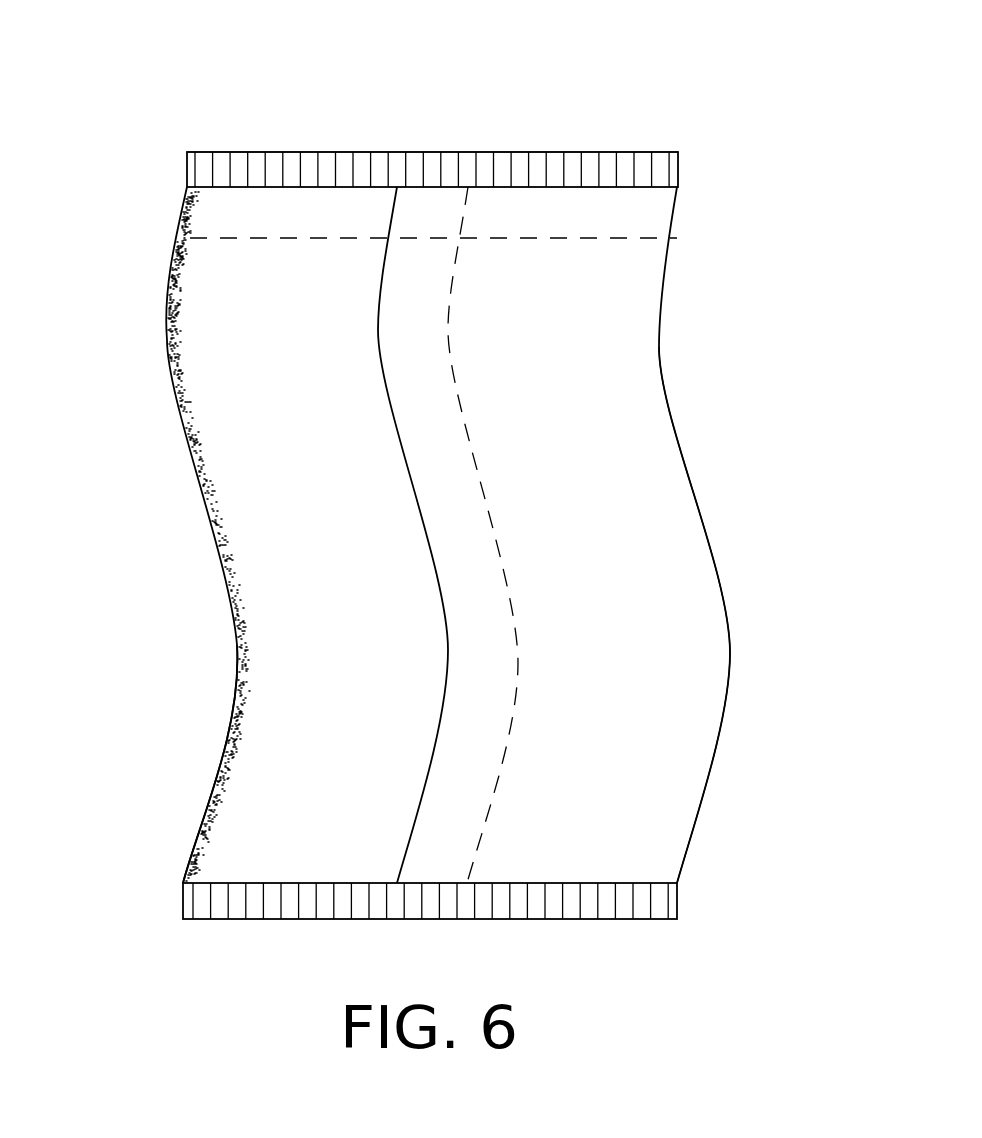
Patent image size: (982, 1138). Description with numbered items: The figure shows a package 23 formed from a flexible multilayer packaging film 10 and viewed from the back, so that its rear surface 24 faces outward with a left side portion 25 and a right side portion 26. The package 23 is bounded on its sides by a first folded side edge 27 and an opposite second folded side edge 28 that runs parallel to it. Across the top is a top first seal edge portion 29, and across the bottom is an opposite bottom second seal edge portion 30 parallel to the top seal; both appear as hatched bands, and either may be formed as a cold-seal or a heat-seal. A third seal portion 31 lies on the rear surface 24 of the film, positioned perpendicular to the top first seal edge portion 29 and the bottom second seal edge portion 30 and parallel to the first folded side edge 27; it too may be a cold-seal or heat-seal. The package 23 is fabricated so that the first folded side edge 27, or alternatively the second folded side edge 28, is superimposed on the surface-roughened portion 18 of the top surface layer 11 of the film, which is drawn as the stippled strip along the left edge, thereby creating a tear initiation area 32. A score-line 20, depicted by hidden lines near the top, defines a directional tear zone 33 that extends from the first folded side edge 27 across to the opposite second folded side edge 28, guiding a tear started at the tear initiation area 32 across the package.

The flexible multilayer packaging film 10 is at (640, 740).
The top surface layer 11 is at (306, 437).
The surface-roughened portion 18 is at (167, 332).
The score-line 20 is at (605, 240).
The package 23 is at (552, 58).
The rear surface 24 is at (610, 580).
The left side portion 25 is at (352, 825).
The right side portion 26 is at (622, 822).
The first folded side edge 27 is at (235, 700).
The second folded side edge 28 is at (660, 362).
The top first seal edge portion 29 is at (678, 170).
The bottom second seal edge portion 30 is at (640, 920).
The third seal portion 31 is at (420, 382).
The tear initiation area 32 is at (178, 239).
The directional tear zone 33 is at (288, 224).